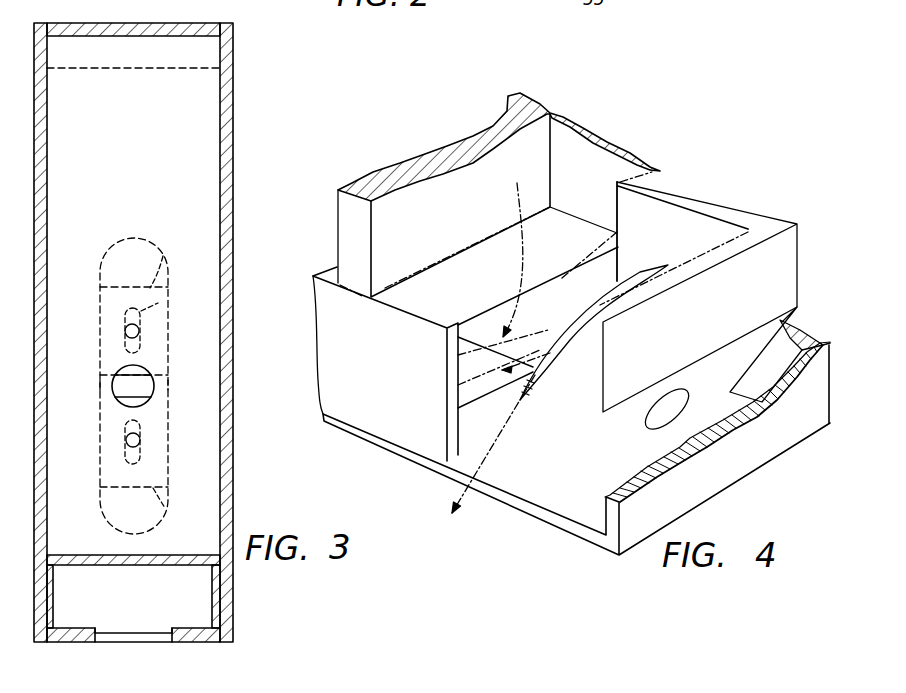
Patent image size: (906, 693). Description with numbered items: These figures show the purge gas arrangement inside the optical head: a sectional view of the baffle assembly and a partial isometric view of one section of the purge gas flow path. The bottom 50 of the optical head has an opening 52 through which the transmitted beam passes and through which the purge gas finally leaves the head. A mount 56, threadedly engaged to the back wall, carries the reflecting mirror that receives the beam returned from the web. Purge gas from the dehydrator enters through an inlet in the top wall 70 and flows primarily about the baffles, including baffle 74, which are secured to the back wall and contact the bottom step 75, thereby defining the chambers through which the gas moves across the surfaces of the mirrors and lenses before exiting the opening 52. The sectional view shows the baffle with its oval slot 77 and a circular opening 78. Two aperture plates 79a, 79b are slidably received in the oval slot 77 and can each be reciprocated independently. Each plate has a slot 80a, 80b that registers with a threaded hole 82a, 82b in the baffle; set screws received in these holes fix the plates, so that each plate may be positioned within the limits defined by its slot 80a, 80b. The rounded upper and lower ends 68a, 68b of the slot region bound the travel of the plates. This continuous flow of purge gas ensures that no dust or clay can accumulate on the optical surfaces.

In FIG. 4, the bottom 50 is at (516, 513).
In FIG. 4, the opening 52 is at (437, 378).
In FIG. 4, the mount 56 is at (748, 210).
In FIG. 4, the top wall 70 is at (833, 347).
In FIG. 4, the baffle 74 is at (459, 153).
In FIG. 4, the bottom step 75 is at (483, 287).
In FIG. 3, the oval slot 77 is at (143, 278).
In FIG. 3, the circular opening 78 is at (140, 366).
In FIG. 3, the aperture plate 79a is at (155, 341).
In FIG. 3, the aperture plate 79b is at (152, 432).
In FIG. 3, the slot 80a is at (141, 311).
In FIG. 3, the slot 80b is at (138, 456).
In FIG. 3, the threaded hole 82a is at (127, 325).
In FIG. 3, the threaded hole 82b is at (127, 440).
In FIG. 3, the upper rounded end 68a is at (168, 256).
In FIG. 3, the lower rounded end 68b is at (166, 490).